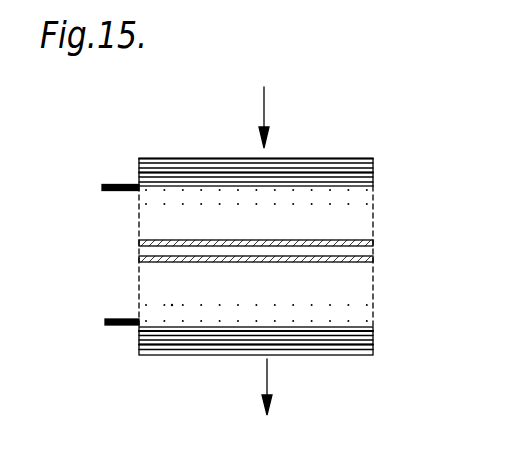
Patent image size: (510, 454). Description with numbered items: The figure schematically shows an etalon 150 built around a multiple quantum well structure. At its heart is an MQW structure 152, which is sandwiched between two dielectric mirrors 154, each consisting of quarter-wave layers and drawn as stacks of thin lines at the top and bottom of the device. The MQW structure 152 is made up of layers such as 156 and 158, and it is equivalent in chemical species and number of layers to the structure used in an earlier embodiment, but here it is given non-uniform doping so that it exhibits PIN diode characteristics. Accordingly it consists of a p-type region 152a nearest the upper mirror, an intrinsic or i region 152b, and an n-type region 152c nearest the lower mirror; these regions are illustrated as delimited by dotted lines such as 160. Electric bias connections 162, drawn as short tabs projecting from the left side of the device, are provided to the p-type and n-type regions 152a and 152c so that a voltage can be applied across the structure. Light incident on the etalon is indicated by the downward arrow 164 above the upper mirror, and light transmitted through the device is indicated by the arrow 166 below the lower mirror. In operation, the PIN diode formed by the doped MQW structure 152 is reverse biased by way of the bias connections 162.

The etalon 150 is at (242, 227).
The MQW structure 152 is at (152, 220).
The p-type region 152a is at (366, 200).
The intrinsic or i region 152b is at (366, 222).
The n-type region 152c is at (366, 313).
The dielectric mirrors 154 is at (160, 165).
The layer 156 is at (373, 260).
The layer 158 is at (148, 253).
The dotted line 160 is at (172, 305).
The electric bias connections 162 is at (102, 188).
The incident light 164 is at (265, 105).
The transmitted light 166 is at (268, 382).